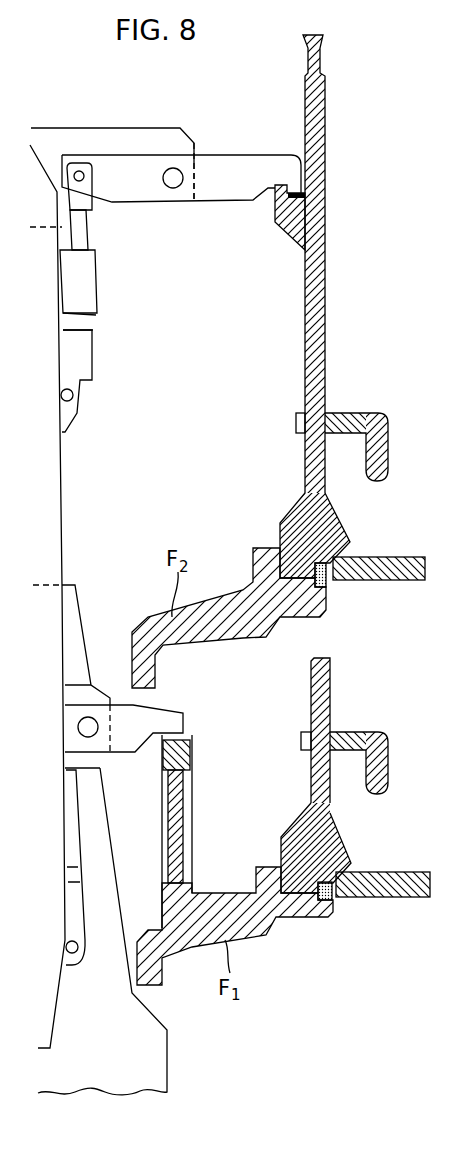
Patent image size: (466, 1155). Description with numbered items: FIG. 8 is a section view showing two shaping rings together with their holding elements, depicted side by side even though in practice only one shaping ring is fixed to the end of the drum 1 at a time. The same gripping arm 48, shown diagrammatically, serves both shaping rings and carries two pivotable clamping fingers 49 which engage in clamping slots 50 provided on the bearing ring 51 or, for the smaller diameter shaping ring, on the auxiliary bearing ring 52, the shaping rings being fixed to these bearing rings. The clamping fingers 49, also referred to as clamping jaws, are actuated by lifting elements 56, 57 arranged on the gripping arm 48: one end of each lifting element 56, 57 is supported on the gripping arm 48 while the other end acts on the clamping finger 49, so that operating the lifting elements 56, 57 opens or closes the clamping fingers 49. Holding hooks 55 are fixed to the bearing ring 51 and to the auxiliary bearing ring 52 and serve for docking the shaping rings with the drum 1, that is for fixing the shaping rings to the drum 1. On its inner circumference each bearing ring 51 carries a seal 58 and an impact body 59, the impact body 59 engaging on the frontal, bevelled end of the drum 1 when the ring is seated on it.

The drum 1 is at (401, 557).
The gripping arm 48 is at (72, 475).
The clamping finger 49 is at (220, 200).
The clamping slot 50 is at (310, 200).
The bearing ring 51 is at (321, 300).
The auxiliary bearing ring 52 is at (187, 815).
The holding hook 55 is at (361, 413).
The lifting element 56 is at (82, 296).
The lifting element 57 is at (73, 898).
The seal 58 is at (326, 585).
The impact body 59 is at (330, 520).